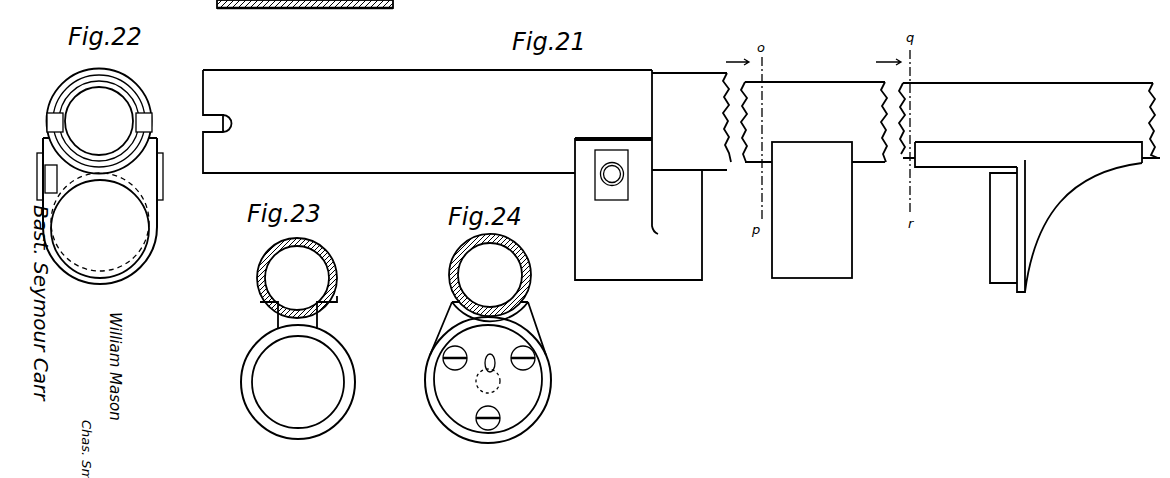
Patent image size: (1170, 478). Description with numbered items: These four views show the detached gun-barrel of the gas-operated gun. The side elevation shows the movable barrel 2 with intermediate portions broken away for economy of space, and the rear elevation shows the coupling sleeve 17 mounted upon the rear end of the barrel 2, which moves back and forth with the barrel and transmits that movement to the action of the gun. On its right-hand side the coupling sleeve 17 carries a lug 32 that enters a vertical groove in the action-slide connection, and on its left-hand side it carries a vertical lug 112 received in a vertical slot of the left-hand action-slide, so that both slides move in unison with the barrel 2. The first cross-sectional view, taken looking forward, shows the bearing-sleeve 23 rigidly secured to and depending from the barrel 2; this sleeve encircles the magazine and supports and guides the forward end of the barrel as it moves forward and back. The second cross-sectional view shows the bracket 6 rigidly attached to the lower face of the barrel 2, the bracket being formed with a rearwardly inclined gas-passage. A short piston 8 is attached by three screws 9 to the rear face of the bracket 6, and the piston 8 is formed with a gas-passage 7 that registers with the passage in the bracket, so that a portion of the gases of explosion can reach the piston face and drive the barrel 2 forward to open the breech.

In FIG. 21, the movable barrel 2 is at (681, 152).
In FIG. 22, the movable barrel 2 is at (128, 100).
In FIG. 23, the movable barrel 2 is at (257, 274).
In FIG. 24, the movable barrel 2 is at (449, 267).
In FIG. 21, the bracket 6 is at (1063, 193).
In FIG. 24, the bracket 6 is at (540, 352).
In FIG. 24, the gas-passage 7 is at (492, 358).
In FIG. 21, the short piston 8 is at (1003, 228).
In FIG. 24, the short piston 8 is at (498, 387).
In FIG. 24, the screws 9 is at (447, 355).
In FIG. 21, the coupling sleeve 17 is at (638, 209).
In FIG. 22, the coupling sleeve 17 is at (150, 229).
In FIG. 21, the bearing-sleeve 23 is at (812, 210).
In FIG. 23, the bearing-sleeve 23 is at (248, 360).
In FIG. 21, the lug 32 is at (612, 200).
In FIG. 22, the lug 32 is at (29, 176).
In FIG. 22, the vertical lug 112 is at (163, 180).